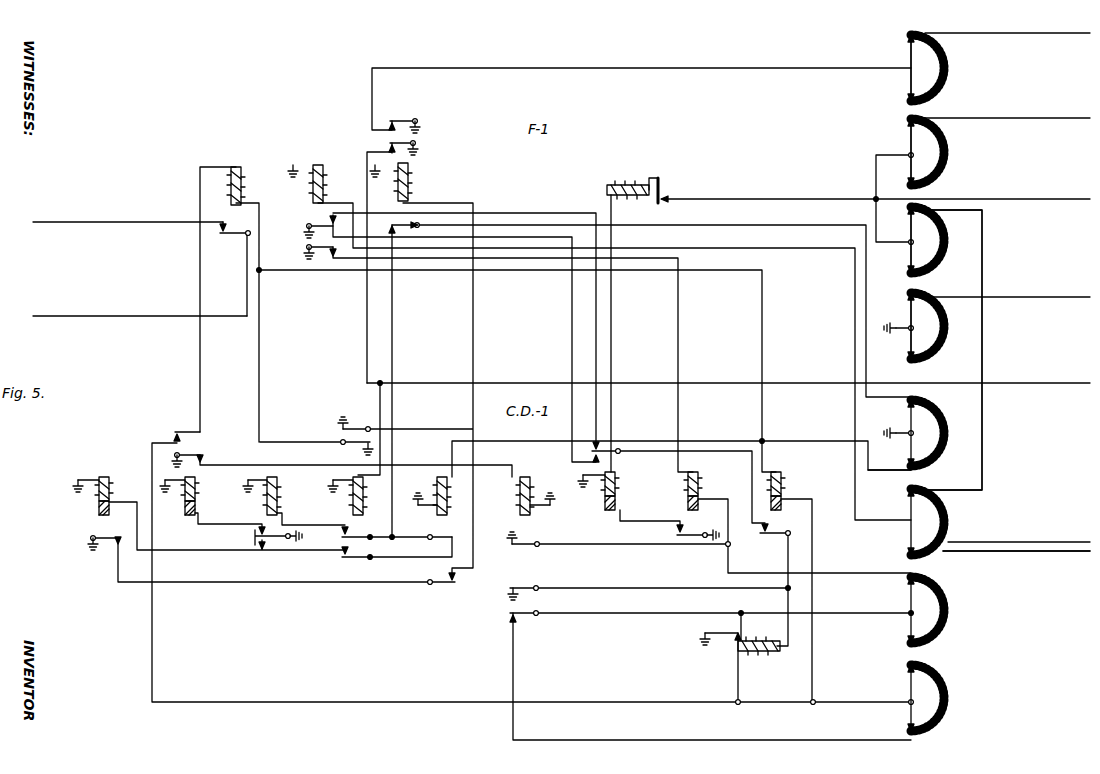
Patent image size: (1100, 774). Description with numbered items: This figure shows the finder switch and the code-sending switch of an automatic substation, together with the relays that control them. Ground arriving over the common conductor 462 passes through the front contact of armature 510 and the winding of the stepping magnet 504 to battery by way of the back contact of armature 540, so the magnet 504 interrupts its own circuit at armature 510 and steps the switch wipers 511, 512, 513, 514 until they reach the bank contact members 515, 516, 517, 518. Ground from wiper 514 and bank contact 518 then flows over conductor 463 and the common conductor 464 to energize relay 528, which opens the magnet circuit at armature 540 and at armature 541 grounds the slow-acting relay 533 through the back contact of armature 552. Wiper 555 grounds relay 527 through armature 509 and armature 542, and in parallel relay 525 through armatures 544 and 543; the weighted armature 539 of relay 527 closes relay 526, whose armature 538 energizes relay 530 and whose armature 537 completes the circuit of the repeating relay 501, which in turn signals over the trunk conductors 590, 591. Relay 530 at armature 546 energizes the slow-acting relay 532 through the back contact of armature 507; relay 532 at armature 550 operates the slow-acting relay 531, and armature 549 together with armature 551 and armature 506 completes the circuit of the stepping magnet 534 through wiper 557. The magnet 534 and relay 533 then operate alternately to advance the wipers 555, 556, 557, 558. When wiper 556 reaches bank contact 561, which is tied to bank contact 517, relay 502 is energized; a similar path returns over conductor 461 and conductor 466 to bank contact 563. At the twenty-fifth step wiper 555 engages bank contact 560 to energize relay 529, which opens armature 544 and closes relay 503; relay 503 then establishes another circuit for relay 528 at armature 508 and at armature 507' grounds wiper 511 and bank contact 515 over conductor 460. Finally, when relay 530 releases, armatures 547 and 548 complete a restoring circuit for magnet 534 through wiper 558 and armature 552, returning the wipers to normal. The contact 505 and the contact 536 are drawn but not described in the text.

The conductor 460 is at (1058, 33).
The conductor 461 is at (1060, 118).
The common conductor 462 is at (1059, 199).
The conductor 463 is at (1062, 297).
The common conductor 464 is at (1053, 383).
The conductor 466 is at (1048, 551).
The repeating relay 501 is at (238, 167).
The relay 502 is at (320, 165).
The relay 503 is at (412, 183).
The stepping magnet 504 is at (637, 182).
The contact 505 is at (233, 234).
The armature 506 is at (309, 226).
The armature 507 is at (305, 249).
The armature 507' is at (423, 116).
The armature 508 is at (413, 143).
The armature 509 is at (393, 222).
The armature 510 is at (662, 190).
The switch wiper 511 is at (908, 54).
The switch wiper 512 is at (908, 140).
The switch wiper 513 is at (908, 230).
The switch wiper 514 is at (908, 310).
The bank contact member 515 is at (933, 36).
The bank contact member 516 is at (934, 121).
The bank contact member 517 is at (935, 210).
The bank contact member 518 is at (933, 297).
The slow-acting relay 525 is at (109, 490).
The slow-acting relay 526 is at (195, 490).
The relay 527 is at (277, 490).
The relay 528 is at (353, 510).
The relay 529 is at (442, 477).
The relay 530 is at (507, 496).
The slow-acting relay 531 is at (615, 488).
The slow-acting relay 532 is at (698, 484).
The slow-acting relay 533 is at (781, 482).
The stepping magnet 534 is at (768, 640).
The contact 536 is at (96, 536).
The armature 537 is at (186, 432).
The armature 538 is at (196, 455).
The armature 539 is at (270, 540).
The armature 540 is at (368, 429).
The armature 541 is at (343, 443).
The armature 542 is at (352, 537).
The armature 543 is at (350, 557).
The armature 544 is at (436, 537).
The armature 546 is at (530, 544).
The armature 547 is at (524, 614).
The armature 548 is at (530, 588).
The armature 549 is at (606, 442).
The armature 550 is at (690, 536).
The armature 551 is at (770, 534).
The armature 552 is at (738, 640).
The wiper 555 is at (908, 422).
The wiper 556 is at (908, 516).
The wiper 557 is at (908, 597).
The wiper 558 is at (908, 686).
The bank contact 560 is at (908, 470).
The bank contact 561 is at (930, 490).
The bank contact 563 is at (940, 549).
The trunk conductor 590 is at (88, 222).
The trunk conductor 591 is at (80, 316).